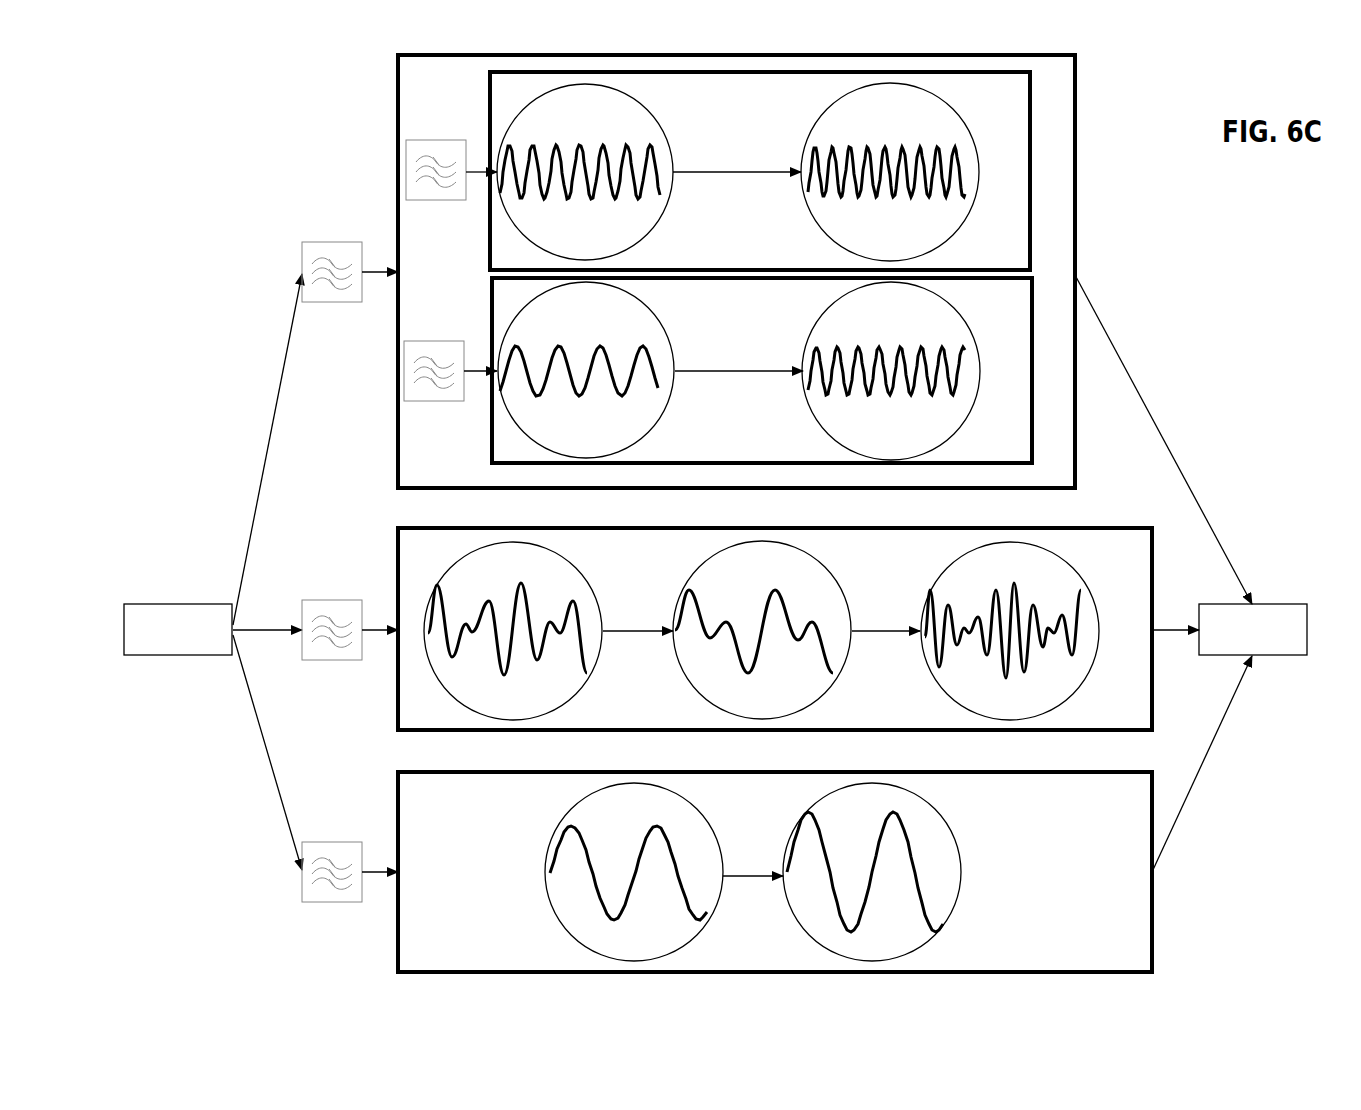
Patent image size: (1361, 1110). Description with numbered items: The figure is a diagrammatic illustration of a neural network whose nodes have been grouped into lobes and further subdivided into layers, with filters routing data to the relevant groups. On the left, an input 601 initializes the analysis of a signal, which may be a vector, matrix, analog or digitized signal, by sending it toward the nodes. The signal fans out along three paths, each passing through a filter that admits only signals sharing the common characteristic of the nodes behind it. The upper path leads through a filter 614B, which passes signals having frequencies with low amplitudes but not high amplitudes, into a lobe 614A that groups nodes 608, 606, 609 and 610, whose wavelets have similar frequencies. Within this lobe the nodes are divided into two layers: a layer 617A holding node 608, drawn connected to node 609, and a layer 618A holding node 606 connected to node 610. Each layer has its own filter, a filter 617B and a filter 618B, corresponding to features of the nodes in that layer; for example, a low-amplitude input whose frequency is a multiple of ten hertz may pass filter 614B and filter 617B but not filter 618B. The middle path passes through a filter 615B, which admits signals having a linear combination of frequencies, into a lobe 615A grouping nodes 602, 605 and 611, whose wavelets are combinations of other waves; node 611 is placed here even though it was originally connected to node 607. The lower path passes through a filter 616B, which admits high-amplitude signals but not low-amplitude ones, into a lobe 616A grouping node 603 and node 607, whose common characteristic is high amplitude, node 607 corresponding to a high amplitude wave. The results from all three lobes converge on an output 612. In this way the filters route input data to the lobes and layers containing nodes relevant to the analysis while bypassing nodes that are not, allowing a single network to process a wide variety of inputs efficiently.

The input 601 is at (173, 603).
The node 602 is at (576, 565).
The node 603 is at (698, 806).
The node 605 is at (839, 578).
The node 606 is at (668, 336).
The node 607 is at (945, 812).
The node 608 is at (652, 111).
The node 609 is at (970, 128).
The node 610 is at (972, 323).
The node 611 is at (1078, 571).
The output 612 is at (1307, 604).
The lobe 614A is at (1075, 112).
The filter 614B is at (340, 242).
The lobe 615A is at (1152, 572).
The filter 615B is at (332, 600).
The lobe 616A is at (1152, 898).
The filter 616B is at (328, 842).
The layer 617A is at (1030, 142).
The filter 617B is at (430, 140).
The layer 618A is at (1032, 318).
The filter 618B is at (428, 341).